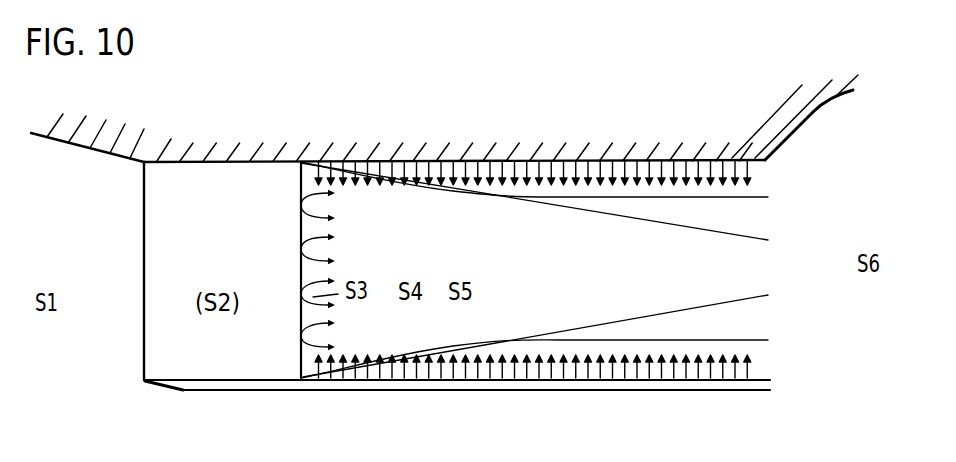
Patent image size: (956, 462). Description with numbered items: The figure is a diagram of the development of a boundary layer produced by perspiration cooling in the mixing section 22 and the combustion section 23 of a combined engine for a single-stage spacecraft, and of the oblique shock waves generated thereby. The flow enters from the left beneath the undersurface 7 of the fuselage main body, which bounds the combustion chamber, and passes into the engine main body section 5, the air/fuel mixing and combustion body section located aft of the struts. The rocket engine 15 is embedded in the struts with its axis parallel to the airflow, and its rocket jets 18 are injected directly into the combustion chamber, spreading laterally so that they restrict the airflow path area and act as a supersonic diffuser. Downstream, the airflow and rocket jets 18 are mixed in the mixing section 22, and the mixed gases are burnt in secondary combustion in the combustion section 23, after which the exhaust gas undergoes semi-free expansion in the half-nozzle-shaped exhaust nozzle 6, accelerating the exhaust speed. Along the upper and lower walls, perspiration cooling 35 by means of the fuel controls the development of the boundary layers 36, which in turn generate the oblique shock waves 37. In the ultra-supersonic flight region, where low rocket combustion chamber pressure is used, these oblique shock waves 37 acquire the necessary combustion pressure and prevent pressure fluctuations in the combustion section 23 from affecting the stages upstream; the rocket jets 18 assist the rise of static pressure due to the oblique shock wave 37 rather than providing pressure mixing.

The engine main body section 5 is at (494, 111).
The exhaust nozzle 6 is at (814, 110).
The undersurface 7 is at (73, 146).
The rocket engine 15 is at (177, 277).
The rocket jet 18 is at (337, 216).
The mixing section 22 is at (423, 271).
The combustion section 23 is at (473, 271).
The perspiration cooling 35 is at (574, 160).
The boundary layer 36 is at (768, 197).
The oblique shock wave 37 is at (768, 240).